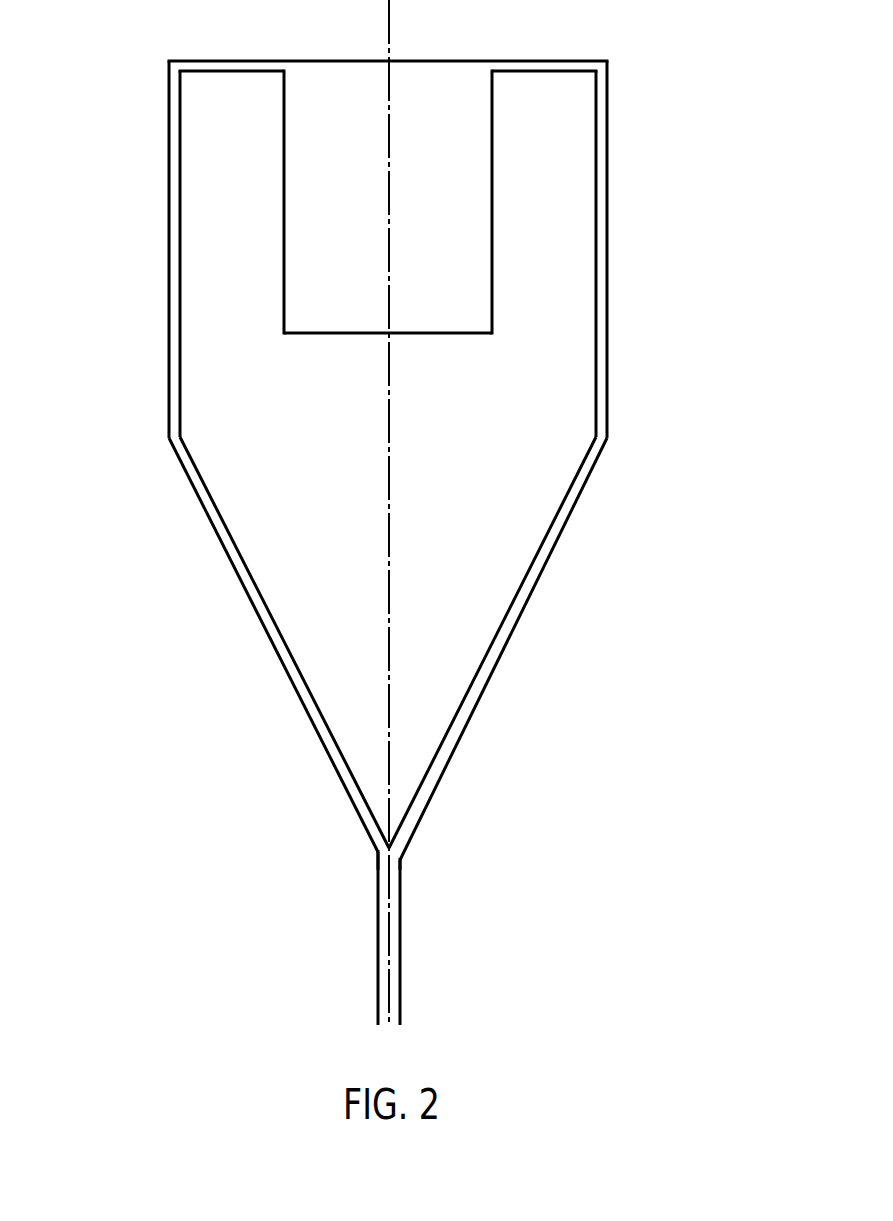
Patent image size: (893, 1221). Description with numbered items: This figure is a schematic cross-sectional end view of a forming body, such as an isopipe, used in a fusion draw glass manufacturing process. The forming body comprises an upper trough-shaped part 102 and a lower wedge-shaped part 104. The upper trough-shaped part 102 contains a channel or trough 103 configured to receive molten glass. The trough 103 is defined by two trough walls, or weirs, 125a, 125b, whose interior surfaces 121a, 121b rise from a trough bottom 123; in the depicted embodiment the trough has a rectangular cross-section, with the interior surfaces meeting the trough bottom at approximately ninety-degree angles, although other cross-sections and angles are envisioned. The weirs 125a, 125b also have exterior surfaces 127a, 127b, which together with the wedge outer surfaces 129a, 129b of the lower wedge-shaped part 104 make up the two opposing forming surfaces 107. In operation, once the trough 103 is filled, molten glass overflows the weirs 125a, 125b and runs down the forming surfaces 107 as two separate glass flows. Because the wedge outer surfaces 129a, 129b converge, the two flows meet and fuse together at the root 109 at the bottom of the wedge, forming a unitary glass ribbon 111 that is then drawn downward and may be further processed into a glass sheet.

The upper trough-shaped part 102 is at (552, 393).
The trough 103 is at (358, 159).
The lower wedge-shaped part 104 is at (297, 504).
The forming surfaces 107 is at (140, 423).
The root 109 is at (372, 853).
The glass ribbon 111 is at (402, 928).
The interior surface 121a is at (285, 280).
The interior surface 121b is at (490, 251).
The trough bottom 123 is at (400, 333).
The trough wall 125a is at (219, 74).
The trough wall 125b is at (541, 74).
The exterior surface 127a is at (177, 278).
The exterior surface 127b is at (598, 278).
The wedge outer surface 129a is at (267, 603).
The wedge outer surface 129b is at (510, 603).